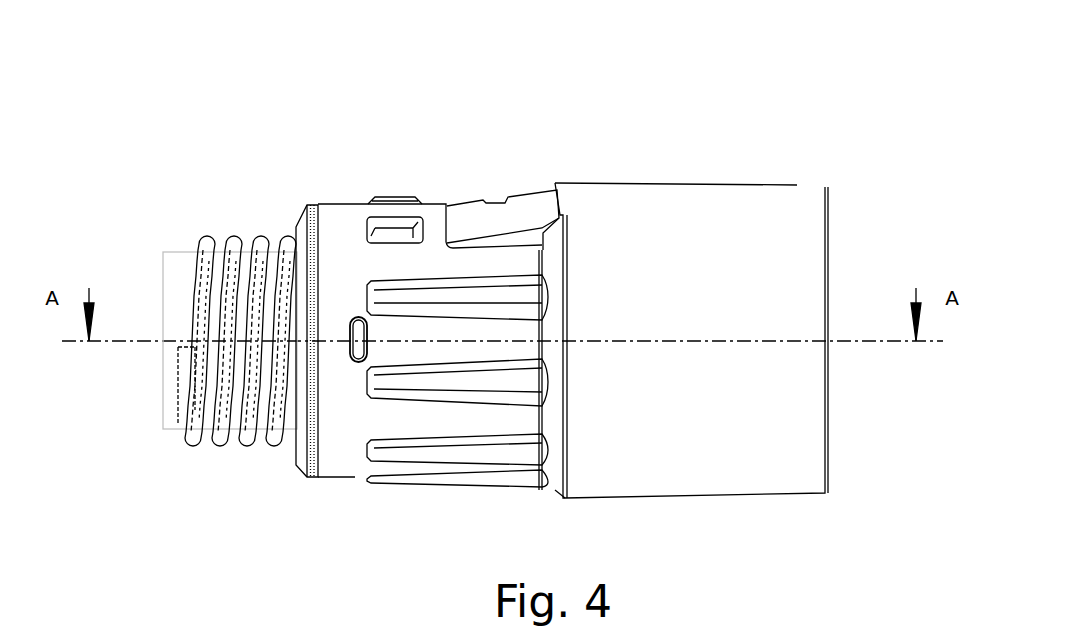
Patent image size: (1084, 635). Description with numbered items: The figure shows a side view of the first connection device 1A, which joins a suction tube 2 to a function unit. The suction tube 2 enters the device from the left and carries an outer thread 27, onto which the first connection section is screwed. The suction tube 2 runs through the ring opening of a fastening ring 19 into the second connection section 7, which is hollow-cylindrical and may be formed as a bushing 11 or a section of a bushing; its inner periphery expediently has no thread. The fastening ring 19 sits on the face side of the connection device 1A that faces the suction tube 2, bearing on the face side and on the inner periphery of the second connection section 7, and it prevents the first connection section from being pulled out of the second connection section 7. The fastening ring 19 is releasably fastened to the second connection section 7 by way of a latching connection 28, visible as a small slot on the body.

The first connection device 1A is at (183, 98).
The suction tube 2 is at (180, 277).
The outer thread 27 is at (212, 248).
The fastening ring 19 is at (302, 223).
The second connection section 7 is at (572, 322).
The bushing 11 is at (343, 220).
The latching connection 28 is at (362, 360).